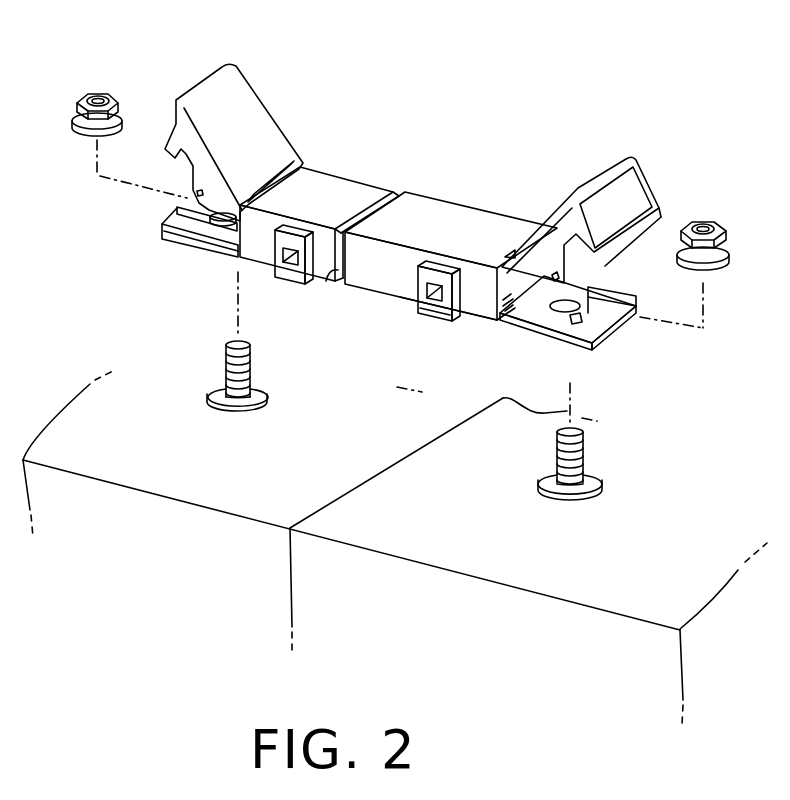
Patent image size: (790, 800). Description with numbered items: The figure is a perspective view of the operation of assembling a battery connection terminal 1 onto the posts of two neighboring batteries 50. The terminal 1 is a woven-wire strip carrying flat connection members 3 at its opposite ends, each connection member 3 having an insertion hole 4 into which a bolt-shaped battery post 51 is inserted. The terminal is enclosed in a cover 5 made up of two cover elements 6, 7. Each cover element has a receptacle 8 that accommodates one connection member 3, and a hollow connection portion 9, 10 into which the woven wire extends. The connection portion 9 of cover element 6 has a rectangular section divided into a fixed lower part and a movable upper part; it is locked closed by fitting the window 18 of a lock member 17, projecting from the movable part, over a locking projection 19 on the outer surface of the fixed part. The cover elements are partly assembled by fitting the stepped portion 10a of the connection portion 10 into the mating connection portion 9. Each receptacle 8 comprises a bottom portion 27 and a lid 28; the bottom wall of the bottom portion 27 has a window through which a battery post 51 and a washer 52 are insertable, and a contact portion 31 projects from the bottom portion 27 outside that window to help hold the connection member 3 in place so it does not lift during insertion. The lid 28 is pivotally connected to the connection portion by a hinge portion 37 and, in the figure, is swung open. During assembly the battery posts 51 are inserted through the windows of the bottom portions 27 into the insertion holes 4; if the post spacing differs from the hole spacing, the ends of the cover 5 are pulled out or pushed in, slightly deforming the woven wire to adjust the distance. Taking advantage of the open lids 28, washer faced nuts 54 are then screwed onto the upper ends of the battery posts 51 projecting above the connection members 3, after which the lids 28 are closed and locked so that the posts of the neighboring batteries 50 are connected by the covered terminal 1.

The battery connection terminal 1 is at (497, 313).
The connection member 3 is at (190, 220).
The insertion hole 4 is at (213, 227).
The cover 5 is at (474, 81).
The cover element 6 is at (517, 192).
The cover element 7 is at (338, 148).
The receptacle 8 is at (202, 52).
The connection portion 9 is at (443, 212).
The connection portion 10 is at (363, 192).
The stepped portion 10a is at (330, 280).
The lock member 17 is at (422, 303).
The window 18 is at (427, 286).
The locking projection 19 is at (433, 303).
The bottom portion 27 is at (595, 353).
The lid 28 is at (250, 100).
The contact portion 31 is at (617, 322).
The hinge portion 37 is at (277, 167).
The battery 50 is at (195, 495).
The battery post 51 is at (223, 372).
The washer 52 is at (207, 408).
The washer faced nut 54 is at (78, 112).